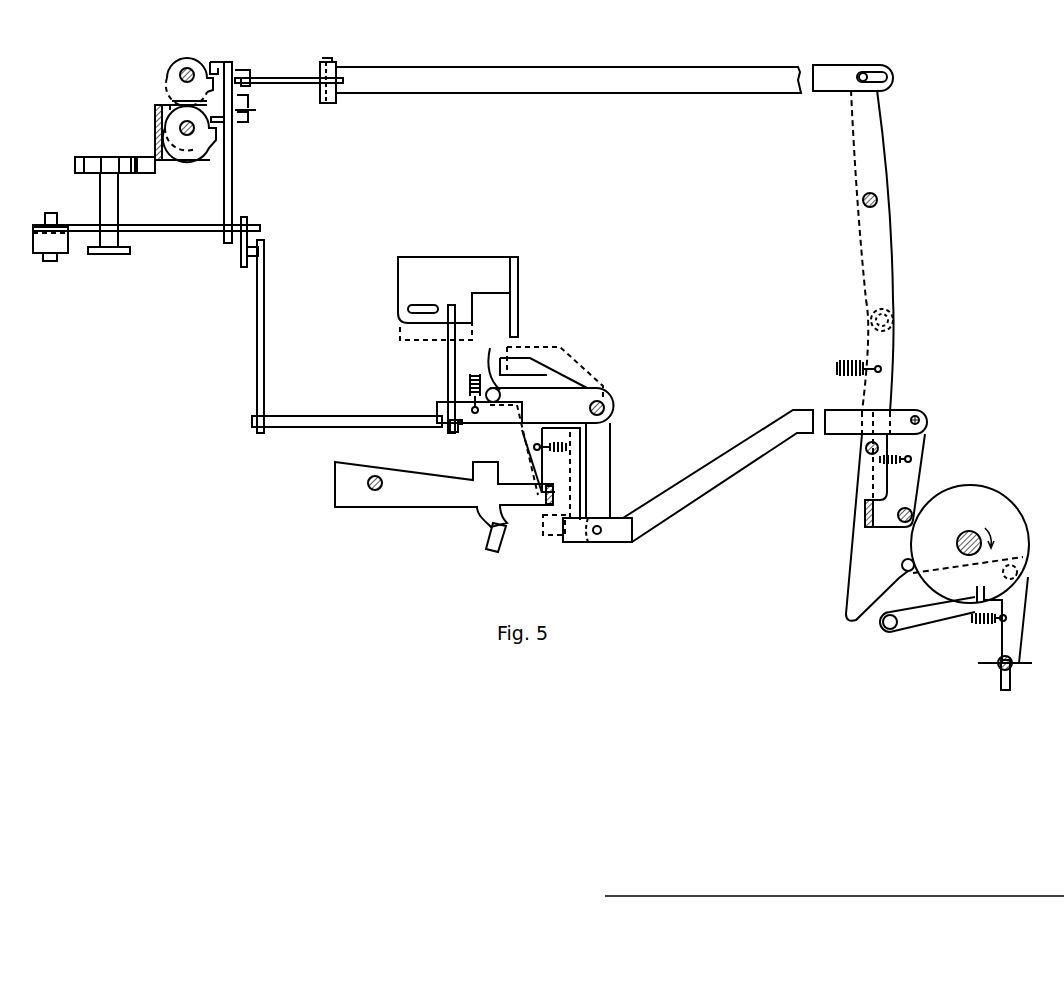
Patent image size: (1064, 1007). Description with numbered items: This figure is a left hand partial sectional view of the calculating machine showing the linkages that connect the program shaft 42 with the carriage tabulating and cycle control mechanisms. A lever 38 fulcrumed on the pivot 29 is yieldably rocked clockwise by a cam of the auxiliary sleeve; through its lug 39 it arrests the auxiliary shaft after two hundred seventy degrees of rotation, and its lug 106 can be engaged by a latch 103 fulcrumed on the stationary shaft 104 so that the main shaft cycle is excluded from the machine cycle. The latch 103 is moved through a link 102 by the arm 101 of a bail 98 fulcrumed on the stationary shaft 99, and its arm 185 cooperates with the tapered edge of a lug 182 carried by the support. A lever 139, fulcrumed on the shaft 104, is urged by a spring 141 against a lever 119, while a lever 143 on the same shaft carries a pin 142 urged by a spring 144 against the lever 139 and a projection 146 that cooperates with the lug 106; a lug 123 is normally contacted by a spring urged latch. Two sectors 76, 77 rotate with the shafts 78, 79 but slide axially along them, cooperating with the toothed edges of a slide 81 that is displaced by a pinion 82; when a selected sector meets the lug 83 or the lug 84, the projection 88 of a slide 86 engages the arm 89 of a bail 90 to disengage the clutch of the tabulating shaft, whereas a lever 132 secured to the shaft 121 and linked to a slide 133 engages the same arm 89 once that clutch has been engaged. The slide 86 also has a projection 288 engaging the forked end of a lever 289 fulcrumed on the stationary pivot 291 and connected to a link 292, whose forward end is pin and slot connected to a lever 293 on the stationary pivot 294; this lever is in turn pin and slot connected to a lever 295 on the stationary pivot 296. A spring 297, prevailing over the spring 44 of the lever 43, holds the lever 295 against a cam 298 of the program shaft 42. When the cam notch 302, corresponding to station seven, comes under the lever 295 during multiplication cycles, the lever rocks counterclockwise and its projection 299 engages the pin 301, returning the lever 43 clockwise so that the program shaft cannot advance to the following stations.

The pivot 29 is at (375, 491).
The lever 38 is at (434, 503).
The lug 39 is at (500, 546).
The program shaft 42 is at (964, 535).
The lever 43 is at (924, 620).
The spring 44 is at (978, 626).
The sector 76 is at (205, 152).
The sector 77 is at (178, 92).
The shaft 78 is at (187, 140).
The shaft 79 is at (180, 73).
The slide 81 is at (158, 165).
The pinion 82 is at (97, 157).
The lug 83 is at (220, 122).
The lug 84 is at (217, 64).
The slide 86 is at (255, 111).
The projection 88 is at (232, 200).
The arm 89 is at (170, 231).
The bail 90 is at (45, 222).
The bail 98 is at (864, 508).
The stationary shaft 99 is at (911, 509).
The arm 101 is at (923, 444).
The link 102 is at (713, 488).
The latch 103 is at (607, 482).
The stationary shaft 104 is at (604, 408).
The lug 106 is at (545, 506).
The lever 119 is at (448, 365).
The shaft 121 is at (336, 416).
The lug 123 is at (473, 310).
The lever 132 is at (264, 306).
The slide 133 is at (243, 258).
The lever 139 is at (495, 421).
The spring 141 is at (470, 386).
The pin 142 is at (489, 388).
The lever 143 is at (493, 365).
The spring 144 is at (560, 481).
The projection 146 is at (540, 460).
The lug 182 is at (518, 310).
The arm 185 is at (548, 370).
The projection 288 is at (248, 76).
The lever 289 is at (275, 84).
The stationary pivot 291 is at (330, 100).
The link 292 is at (553, 93).
The lever 293 is at (876, 146).
The stationary pivot 294 is at (878, 200).
The lever 295 is at (891, 392).
The stationary pivot 296 is at (866, 450).
The spring 297 is at (848, 360).
The cam 298 is at (980, 494).
The projection 299 is at (846, 612).
The pin 301 is at (884, 628).
The notch 302 is at (972, 616).